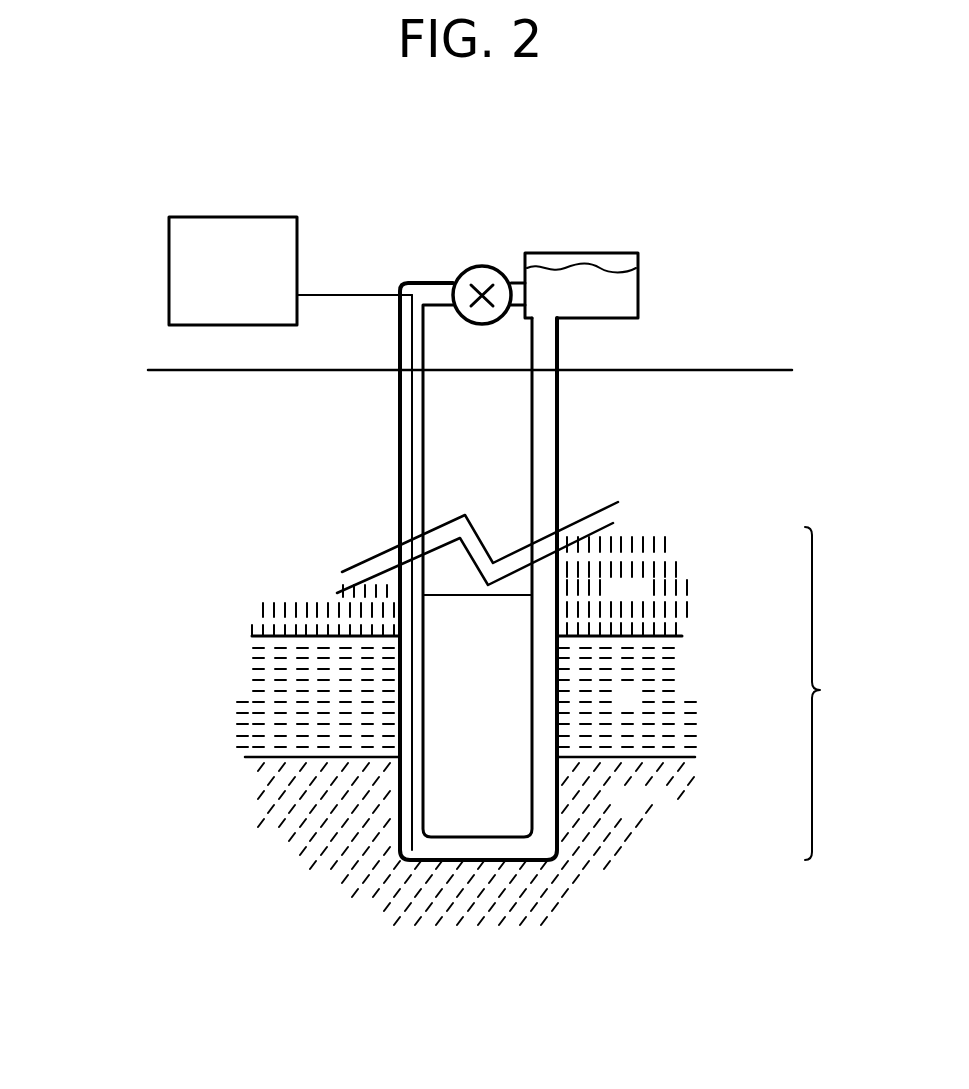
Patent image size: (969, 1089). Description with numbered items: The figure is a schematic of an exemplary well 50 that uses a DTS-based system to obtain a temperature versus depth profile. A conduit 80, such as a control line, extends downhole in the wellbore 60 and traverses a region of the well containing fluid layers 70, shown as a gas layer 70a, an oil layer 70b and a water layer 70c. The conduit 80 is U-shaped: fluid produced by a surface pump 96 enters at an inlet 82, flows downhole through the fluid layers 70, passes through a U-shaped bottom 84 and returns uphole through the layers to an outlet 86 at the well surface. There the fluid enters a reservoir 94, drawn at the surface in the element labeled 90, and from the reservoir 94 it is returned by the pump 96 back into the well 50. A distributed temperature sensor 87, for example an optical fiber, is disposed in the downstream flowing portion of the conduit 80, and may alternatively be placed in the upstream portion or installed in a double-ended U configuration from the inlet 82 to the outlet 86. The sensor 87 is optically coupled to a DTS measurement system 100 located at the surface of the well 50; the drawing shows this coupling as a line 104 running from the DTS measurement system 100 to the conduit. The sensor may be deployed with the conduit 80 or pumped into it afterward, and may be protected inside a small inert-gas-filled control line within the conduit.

The well 50 is at (750, 227).
The wellbore 60 is at (397, 386).
The fluid layers 70 is at (551, 693).
The gas layer 70a is at (668, 590).
The oil layer 70b is at (660, 677).
The water layer 70c is at (675, 778).
The conduit 80 is at (558, 437).
The inlet 82 is at (395, 317).
The U-shaped bottom 84 is at (433, 854).
The outlet 86 is at (545, 349).
The distributed temperature sensor 87 is at (410, 465).
The tank 90 is at (640, 255).
The reservoir 94 is at (570, 268).
The surface pump 96 is at (472, 265).
The DTS measurement system 100 is at (167, 278).
The fiber optic line to DTS 104 is at (328, 293).